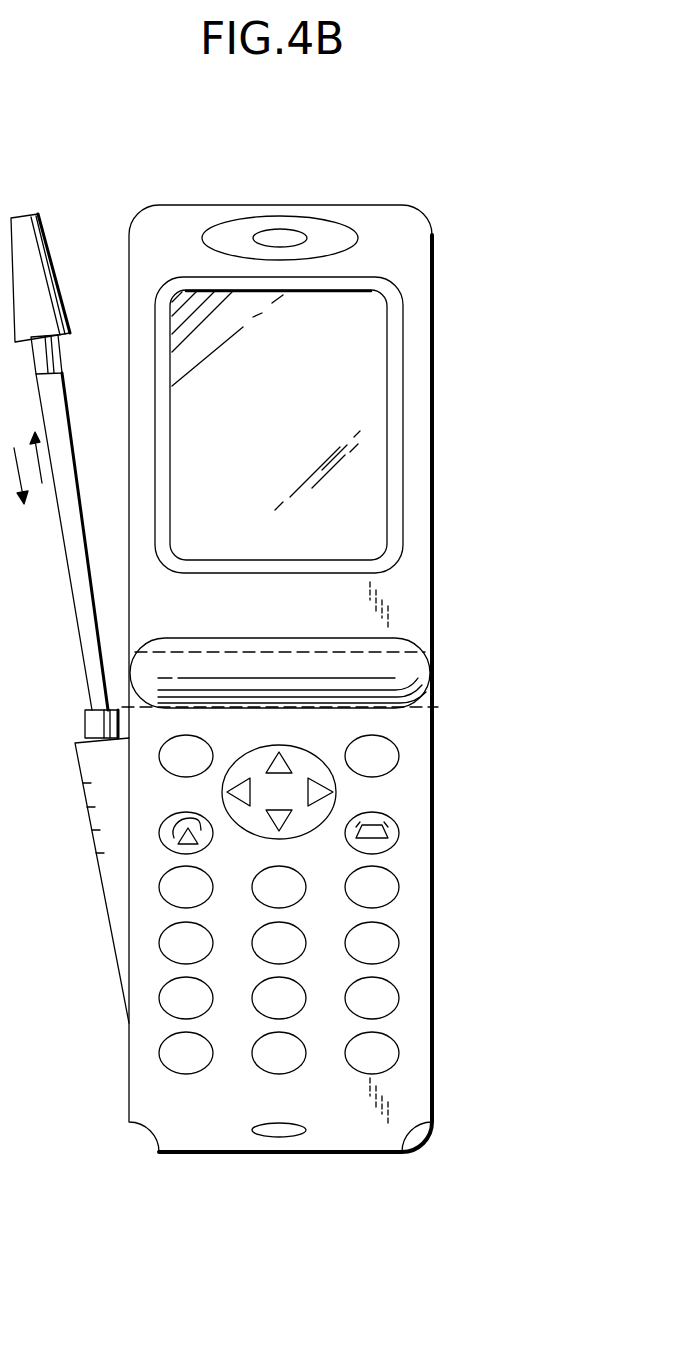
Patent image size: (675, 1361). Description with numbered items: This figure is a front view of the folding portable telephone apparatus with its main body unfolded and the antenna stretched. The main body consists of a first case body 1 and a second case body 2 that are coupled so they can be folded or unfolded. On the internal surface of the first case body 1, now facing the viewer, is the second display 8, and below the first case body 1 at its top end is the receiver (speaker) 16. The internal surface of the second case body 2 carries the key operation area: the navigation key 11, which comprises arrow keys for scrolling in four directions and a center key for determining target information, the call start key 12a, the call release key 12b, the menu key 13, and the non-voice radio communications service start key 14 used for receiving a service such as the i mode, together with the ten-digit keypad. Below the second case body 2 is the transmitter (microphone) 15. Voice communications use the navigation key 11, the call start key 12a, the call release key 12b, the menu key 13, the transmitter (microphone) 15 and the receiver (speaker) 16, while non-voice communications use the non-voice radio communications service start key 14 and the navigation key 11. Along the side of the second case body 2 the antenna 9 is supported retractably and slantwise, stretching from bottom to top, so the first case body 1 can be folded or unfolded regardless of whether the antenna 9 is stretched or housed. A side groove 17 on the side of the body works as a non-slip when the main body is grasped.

The first case body 1 is at (414, 486).
The second case body 2 is at (418, 1102).
The second display 8 is at (363, 350).
The antenna 9 is at (40, 242).
The navigation key 11 is at (305, 760).
The call start key 12a is at (170, 843).
The call release key 12b is at (398, 820).
The menu key 13 is at (399, 755).
The non-voice radio communications service start key 14 is at (159, 756).
The transmitter (microphone) 15 is at (280, 1130).
The receiver (speaker) 16 is at (284, 240).
The side groove 17 is at (93, 838).